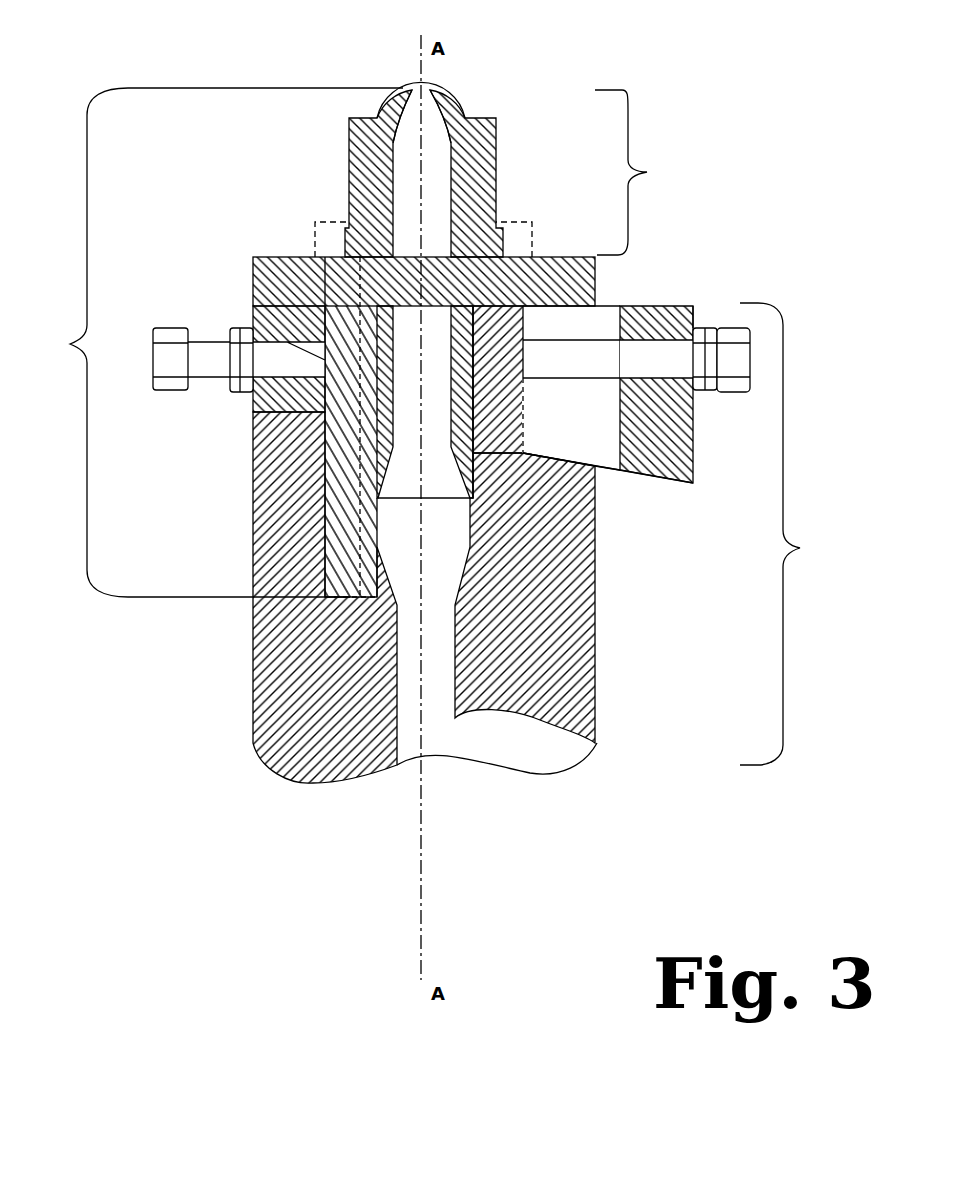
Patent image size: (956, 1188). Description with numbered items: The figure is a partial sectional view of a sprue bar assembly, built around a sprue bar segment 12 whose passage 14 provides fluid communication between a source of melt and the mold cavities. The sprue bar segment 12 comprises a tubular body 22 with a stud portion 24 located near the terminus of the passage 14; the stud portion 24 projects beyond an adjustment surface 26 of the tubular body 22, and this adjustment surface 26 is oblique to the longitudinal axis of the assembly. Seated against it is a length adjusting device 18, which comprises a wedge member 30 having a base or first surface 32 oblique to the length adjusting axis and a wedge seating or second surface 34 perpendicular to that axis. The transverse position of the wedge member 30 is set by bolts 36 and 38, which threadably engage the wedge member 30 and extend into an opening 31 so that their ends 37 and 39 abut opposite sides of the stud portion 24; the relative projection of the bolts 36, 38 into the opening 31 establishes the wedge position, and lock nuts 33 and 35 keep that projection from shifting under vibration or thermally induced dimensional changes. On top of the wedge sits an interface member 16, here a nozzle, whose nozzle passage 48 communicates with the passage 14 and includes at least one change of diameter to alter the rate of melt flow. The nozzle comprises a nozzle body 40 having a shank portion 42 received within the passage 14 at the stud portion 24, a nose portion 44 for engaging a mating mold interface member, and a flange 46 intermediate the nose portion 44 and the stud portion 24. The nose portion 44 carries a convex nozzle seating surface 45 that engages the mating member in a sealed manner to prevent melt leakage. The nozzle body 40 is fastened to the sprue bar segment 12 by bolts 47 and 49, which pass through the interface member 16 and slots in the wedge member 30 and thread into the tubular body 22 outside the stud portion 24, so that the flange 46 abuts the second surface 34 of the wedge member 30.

The sprue bar segment 12 is at (800, 550).
The passage 14 is at (410, 550).
The interface member 16 is at (70, 344).
The length adjusting device 18 is at (756, 279).
The tubular body 22 is at (580, 676).
The stud portion 24 is at (509, 408).
The adjustment surface 26 is at (615, 453).
The wedge member 30 is at (692, 483).
The opening 31 is at (577, 425).
The first surface 32 is at (630, 480).
The lock nut 33 is at (702, 383).
The second surface 34 is at (690, 303).
The lock nut 35 is at (240, 384).
The bolt 36 is at (744, 338).
The end 37 is at (523, 353).
The bolt 38 is at (177, 383).
The end 39 is at (262, 318).
The nozzle body 40 is at (497, 171).
The shank portion 42 is at (477, 468).
The nose portion 44 is at (650, 172).
The nozzle seating surface 45 is at (443, 90).
The flange 46 is at (540, 257).
The bolt 47 is at (512, 227).
The nozzle passage 48 is at (420, 195).
The bolt 49 is at (330, 232).